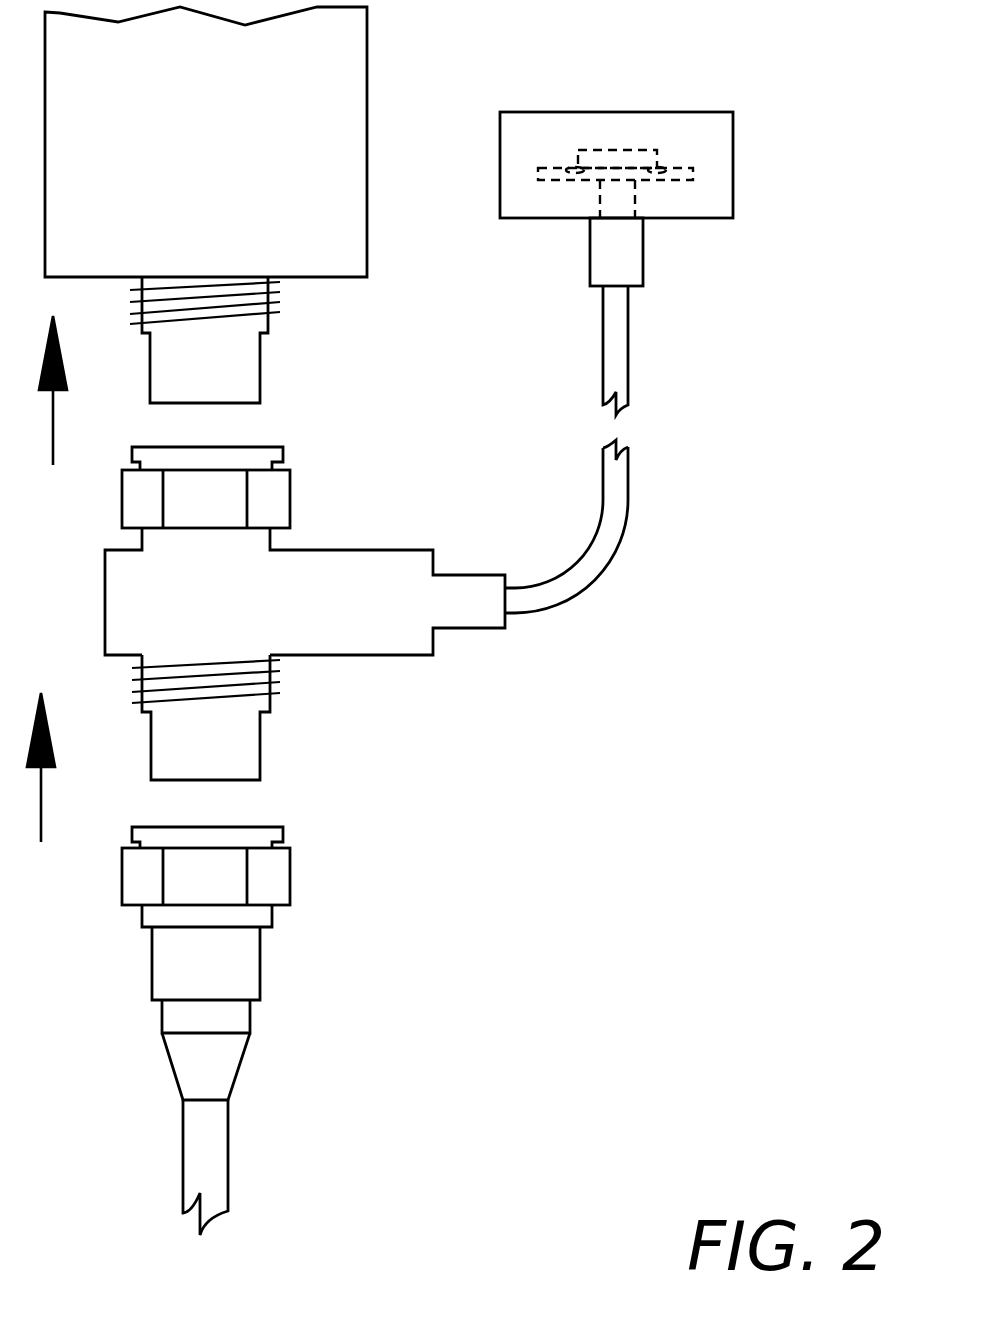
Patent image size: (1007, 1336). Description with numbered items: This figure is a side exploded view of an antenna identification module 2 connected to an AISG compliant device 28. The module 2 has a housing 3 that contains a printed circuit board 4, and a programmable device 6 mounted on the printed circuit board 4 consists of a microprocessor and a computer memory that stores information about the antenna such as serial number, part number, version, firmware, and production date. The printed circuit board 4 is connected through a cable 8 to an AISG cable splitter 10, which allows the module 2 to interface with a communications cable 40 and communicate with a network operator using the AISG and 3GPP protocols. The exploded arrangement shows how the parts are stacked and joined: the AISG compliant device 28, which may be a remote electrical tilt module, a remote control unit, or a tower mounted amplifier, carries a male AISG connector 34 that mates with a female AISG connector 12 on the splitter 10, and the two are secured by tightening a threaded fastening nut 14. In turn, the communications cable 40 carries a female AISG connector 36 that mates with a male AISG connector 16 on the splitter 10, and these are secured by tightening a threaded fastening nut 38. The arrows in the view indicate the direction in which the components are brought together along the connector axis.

The antenna identification module 2 is at (766, 54).
The housing 3 is at (733, 112).
The printed circuit board 4 is at (695, 172).
The programmable device 6 is at (620, 149).
The cable 8 is at (628, 367).
The AISG cable splitter 10 is at (433, 655).
The female AISG connector 12 is at (283, 447).
The threaded fastening nut 14 is at (290, 497).
The male AISG connector 16 is at (260, 745).
The AISG compliant device 28 is at (367, 163).
The male AISG connector 34 is at (260, 367).
The female AISG connector 36 is at (283, 827).
The threaded fastening nut 38 is at (290, 877).
The communications cable 40 is at (228, 1157).